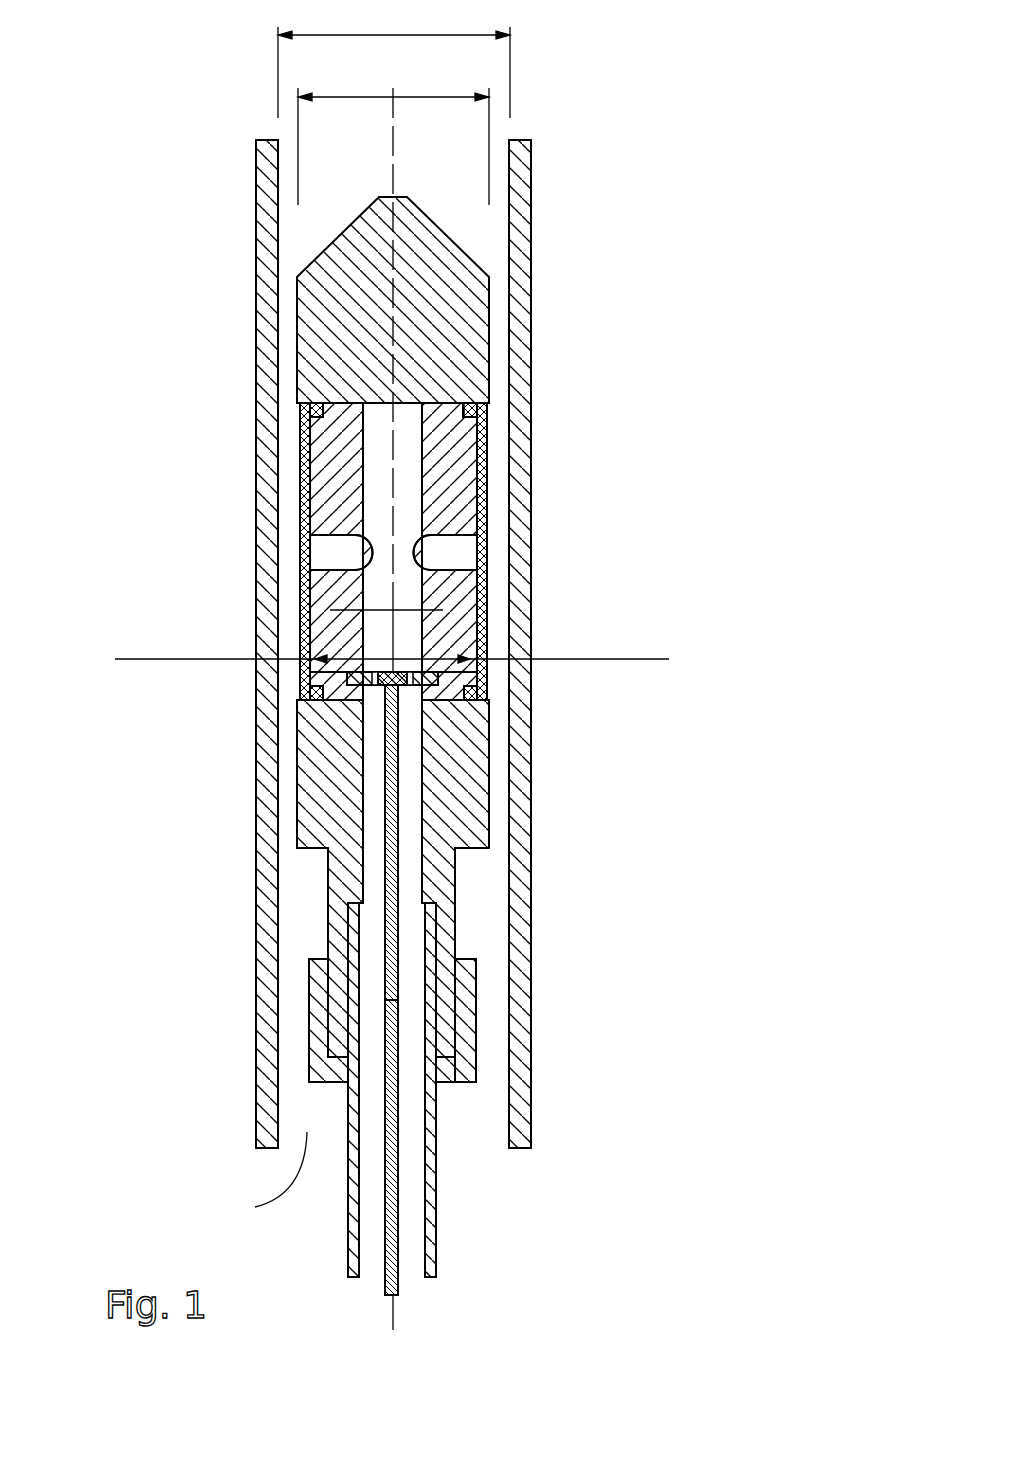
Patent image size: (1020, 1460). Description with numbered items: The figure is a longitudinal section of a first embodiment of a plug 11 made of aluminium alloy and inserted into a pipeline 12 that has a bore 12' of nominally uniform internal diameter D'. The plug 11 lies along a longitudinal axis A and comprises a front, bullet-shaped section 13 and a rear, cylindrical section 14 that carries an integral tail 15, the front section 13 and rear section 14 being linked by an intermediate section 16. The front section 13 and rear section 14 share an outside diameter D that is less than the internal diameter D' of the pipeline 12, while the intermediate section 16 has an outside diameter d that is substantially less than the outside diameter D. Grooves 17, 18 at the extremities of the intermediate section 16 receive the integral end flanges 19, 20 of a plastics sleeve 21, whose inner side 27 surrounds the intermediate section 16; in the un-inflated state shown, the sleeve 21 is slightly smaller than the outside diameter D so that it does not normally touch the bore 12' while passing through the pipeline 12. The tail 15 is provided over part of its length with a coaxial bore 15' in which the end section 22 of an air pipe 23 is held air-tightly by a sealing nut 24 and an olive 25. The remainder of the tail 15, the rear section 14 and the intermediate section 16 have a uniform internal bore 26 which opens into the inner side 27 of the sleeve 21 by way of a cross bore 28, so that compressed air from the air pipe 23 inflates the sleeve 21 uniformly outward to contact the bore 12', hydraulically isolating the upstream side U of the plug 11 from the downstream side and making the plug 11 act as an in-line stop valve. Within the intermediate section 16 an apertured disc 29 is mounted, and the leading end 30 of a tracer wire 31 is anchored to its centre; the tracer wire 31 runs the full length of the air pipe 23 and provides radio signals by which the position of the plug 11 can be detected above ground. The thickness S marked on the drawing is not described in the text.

The plug 11 is at (457, 880).
The pipeline 12 is at (300, 644).
The bore 12' is at (174, 644).
The front section 13 is at (297, 317).
The rear section 14 is at (320, 823).
The tail 15 is at (214, 1090).
The coaxial bore 15' is at (214, 1090).
The intermediate section 16 is at (492, 497).
The groove 17 is at (488, 701).
The groove 18 is at (300, 403).
The end flange 19 is at (300, 700).
The end flange 20 is at (300, 440).
The sleeve 21 is at (669, 610).
The end section 22 is at (437, 1005).
The air pipe 23 is at (437, 942).
The sealing nut 24 is at (477, 1039).
The olive 25 is at (477, 1063).
The internal bore 26 is at (360, 888).
The inner side 27 is at (453, 439).
The cross bore 28 is at (317, 553).
The apertured disc 29 is at (310, 678).
The leading end 30 is at (387, 776).
The tracer wire 31 is at (387, 1108).
The longitudinal axis A is at (393, 253).
The outside diameter D is at (393, 134).
The internal diameter D' is at (394, 60).
The outside diameter d is at (515, 613).
The wall thickness S is at (408, 659).
The upstream side U is at (263, 1180).